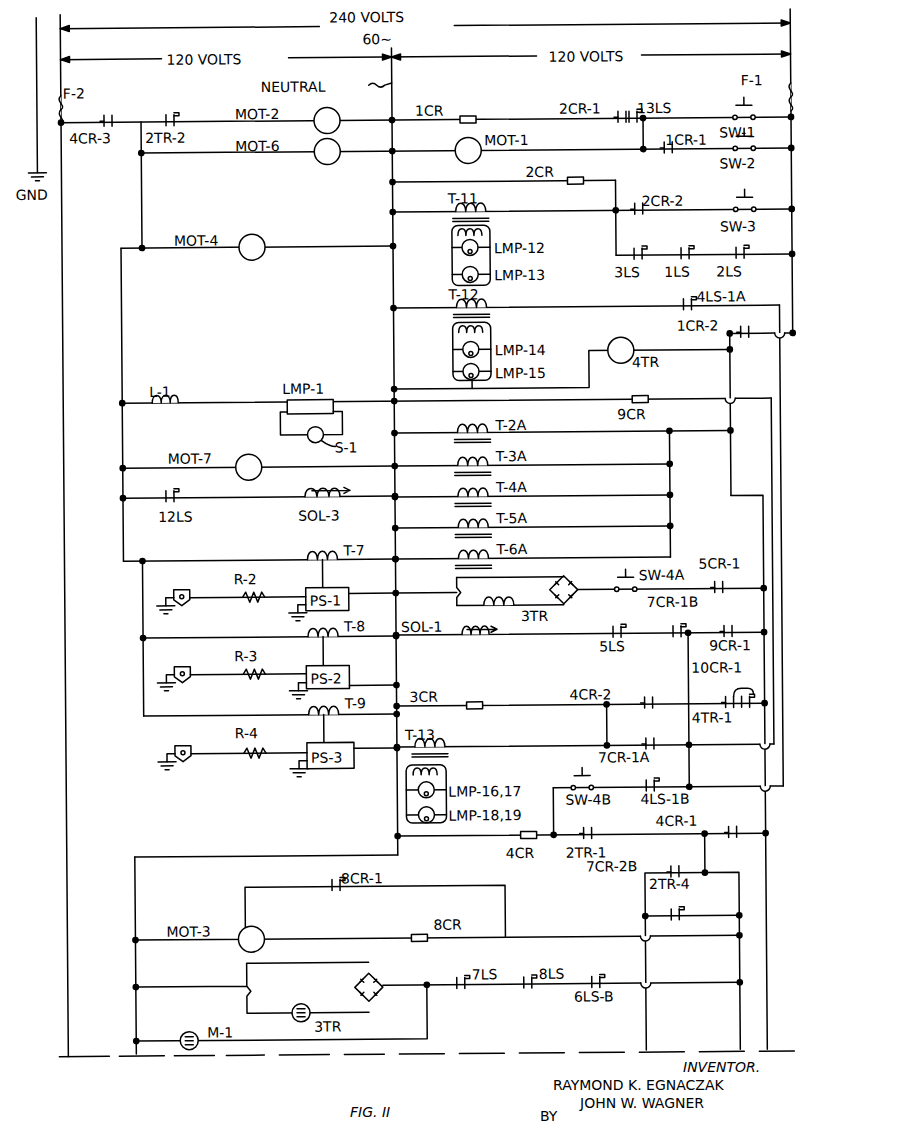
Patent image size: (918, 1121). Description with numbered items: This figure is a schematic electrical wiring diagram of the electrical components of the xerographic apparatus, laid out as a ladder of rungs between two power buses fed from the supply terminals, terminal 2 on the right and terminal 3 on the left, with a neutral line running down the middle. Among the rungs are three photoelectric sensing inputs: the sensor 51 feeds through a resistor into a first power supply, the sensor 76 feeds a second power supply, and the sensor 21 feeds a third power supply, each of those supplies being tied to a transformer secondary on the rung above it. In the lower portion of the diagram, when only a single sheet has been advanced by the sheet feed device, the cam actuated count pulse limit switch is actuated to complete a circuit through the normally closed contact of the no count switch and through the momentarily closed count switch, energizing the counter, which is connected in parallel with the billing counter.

The supply line terminal 2 is at (797, 171).
The supply line terminal 3 is at (54, 536).
The photoelectric sensor 51 is at (187, 588).
The photoelectric sensor 76 is at (187, 665).
The photoelectric sensor 21 is at (187, 744).